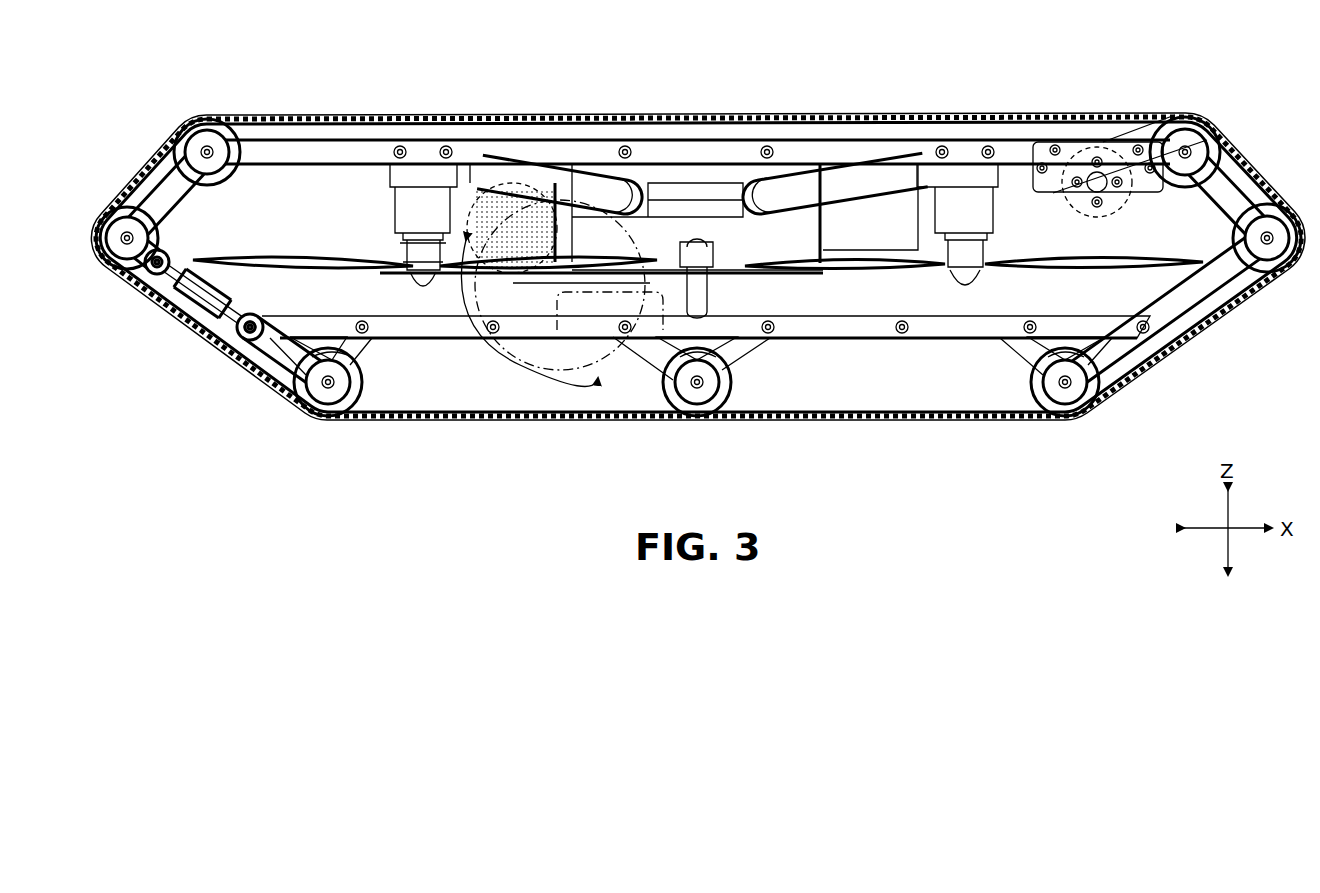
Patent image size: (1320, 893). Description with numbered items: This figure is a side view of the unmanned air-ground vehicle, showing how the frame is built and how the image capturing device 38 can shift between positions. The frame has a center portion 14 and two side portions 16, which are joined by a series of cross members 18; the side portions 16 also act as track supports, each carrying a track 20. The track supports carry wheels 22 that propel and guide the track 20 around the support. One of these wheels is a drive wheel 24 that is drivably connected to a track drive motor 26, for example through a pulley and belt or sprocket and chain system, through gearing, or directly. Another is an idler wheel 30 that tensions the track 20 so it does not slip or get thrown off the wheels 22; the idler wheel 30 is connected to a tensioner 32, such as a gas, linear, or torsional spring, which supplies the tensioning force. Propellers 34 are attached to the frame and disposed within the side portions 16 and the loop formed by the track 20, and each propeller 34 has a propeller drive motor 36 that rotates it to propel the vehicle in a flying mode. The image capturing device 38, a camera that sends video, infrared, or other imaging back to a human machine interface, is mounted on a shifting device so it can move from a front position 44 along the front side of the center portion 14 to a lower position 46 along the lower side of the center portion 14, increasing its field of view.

The center portion 14 is at (760, 250).
The side portion 16 is at (920, 345).
The cross member 18 is at (600, 178).
The track 20 is at (742, 115).
The wheel 22 is at (195, 120).
The drive wheel 24 is at (1205, 120).
The track drive motor 26 is at (1095, 145).
The idler wheel 30 is at (100, 228).
The tensioner 32 is at (200, 322).
The propeller 34 is at (290, 258).
The propeller drive motor 36 is at (392, 205).
The image capturing device 38 is at (448, 180).
The front position 44 is at (400, 243).
The lower position 46 is at (626, 378).